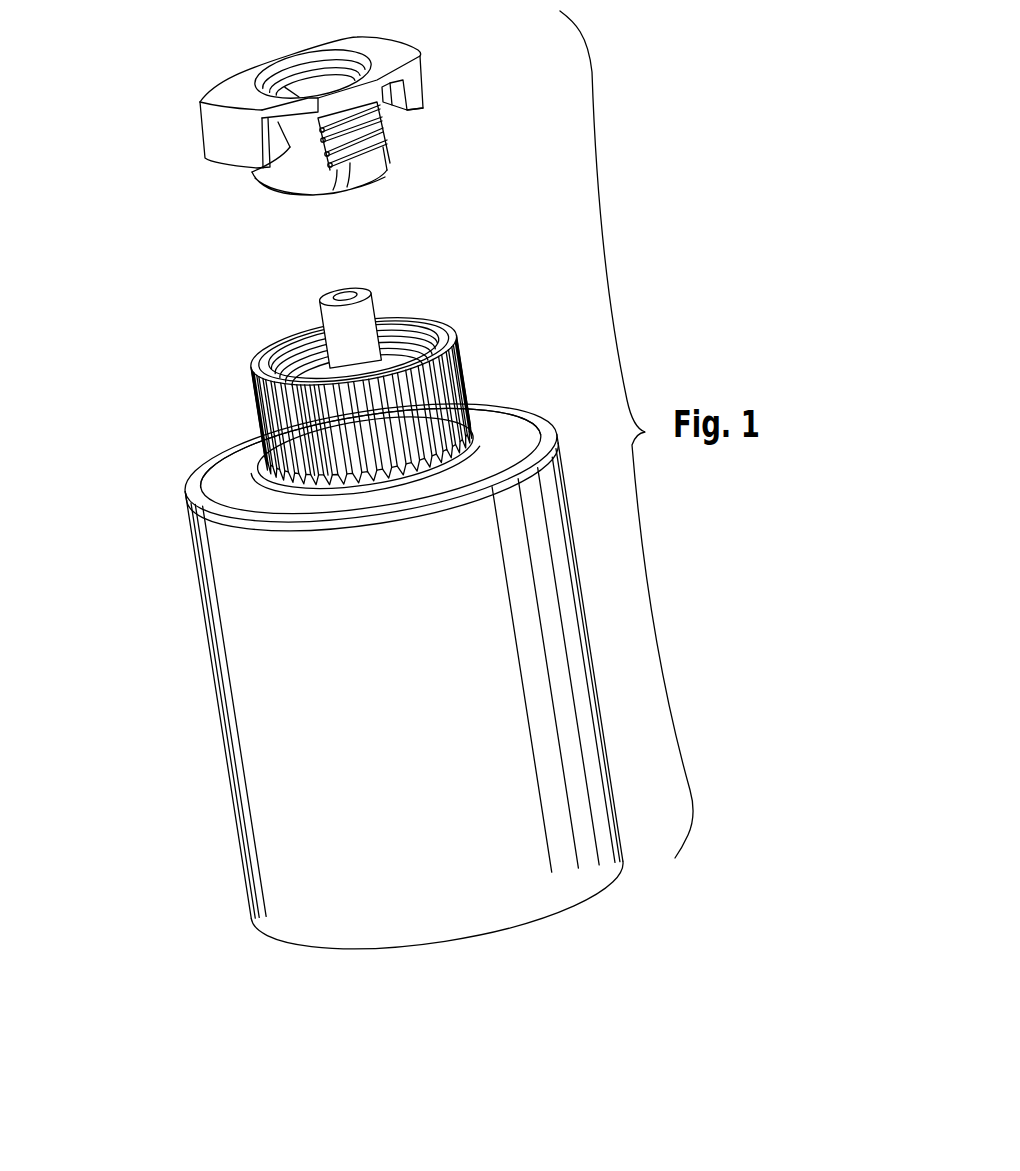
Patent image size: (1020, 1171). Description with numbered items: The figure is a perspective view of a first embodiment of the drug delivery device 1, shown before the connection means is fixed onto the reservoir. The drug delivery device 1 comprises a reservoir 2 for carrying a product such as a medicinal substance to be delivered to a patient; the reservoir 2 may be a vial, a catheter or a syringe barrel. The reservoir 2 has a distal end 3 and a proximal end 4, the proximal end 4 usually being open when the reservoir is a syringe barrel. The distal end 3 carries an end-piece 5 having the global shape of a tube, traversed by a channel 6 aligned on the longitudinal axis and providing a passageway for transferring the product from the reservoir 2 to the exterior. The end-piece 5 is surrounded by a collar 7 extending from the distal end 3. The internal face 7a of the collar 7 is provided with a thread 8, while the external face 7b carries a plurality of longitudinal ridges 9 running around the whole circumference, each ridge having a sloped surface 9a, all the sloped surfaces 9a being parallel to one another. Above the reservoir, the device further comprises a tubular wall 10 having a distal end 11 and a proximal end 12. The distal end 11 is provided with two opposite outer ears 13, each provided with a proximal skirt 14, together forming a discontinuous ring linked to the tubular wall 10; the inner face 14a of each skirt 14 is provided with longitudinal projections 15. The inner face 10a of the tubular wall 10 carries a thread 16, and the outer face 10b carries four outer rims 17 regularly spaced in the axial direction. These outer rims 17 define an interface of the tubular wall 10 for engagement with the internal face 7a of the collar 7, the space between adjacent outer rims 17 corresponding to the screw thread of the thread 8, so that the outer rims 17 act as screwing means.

The drug delivery device 1 is at (128, 397).
The reservoir 2 is at (214, 733).
The distal end 3 is at (500, 372).
The proximal end 4 is at (399, 956).
The end-piece 5 is at (298, 303).
The channel 6 is at (340, 286).
The collar 7 is at (466, 345).
The internal face of the collar 7a is at (393, 312).
The external face of the collar 7b is at (246, 396).
The thread 8 is at (290, 345).
The longitudinal ridges 9 is at (303, 423).
The sloped surface 9a is at (232, 473).
The tubular wall 10 is at (400, 152).
The inner face of the tubular wall 10a is at (327, 66).
The outer face of the tubular wall 10b is at (307, 187).
The distal end 11 is at (304, 58).
The proximal end 12 is at (378, 182).
The outer ears 13 is at (389, 30).
The proximal skirt 14 is at (416, 80).
The inner face of the skirt 14a is at (398, 122).
The longitudinal projections 15 is at (412, 113).
The thread 16 is at (283, 78).
The outer rims 17 is at (340, 170).